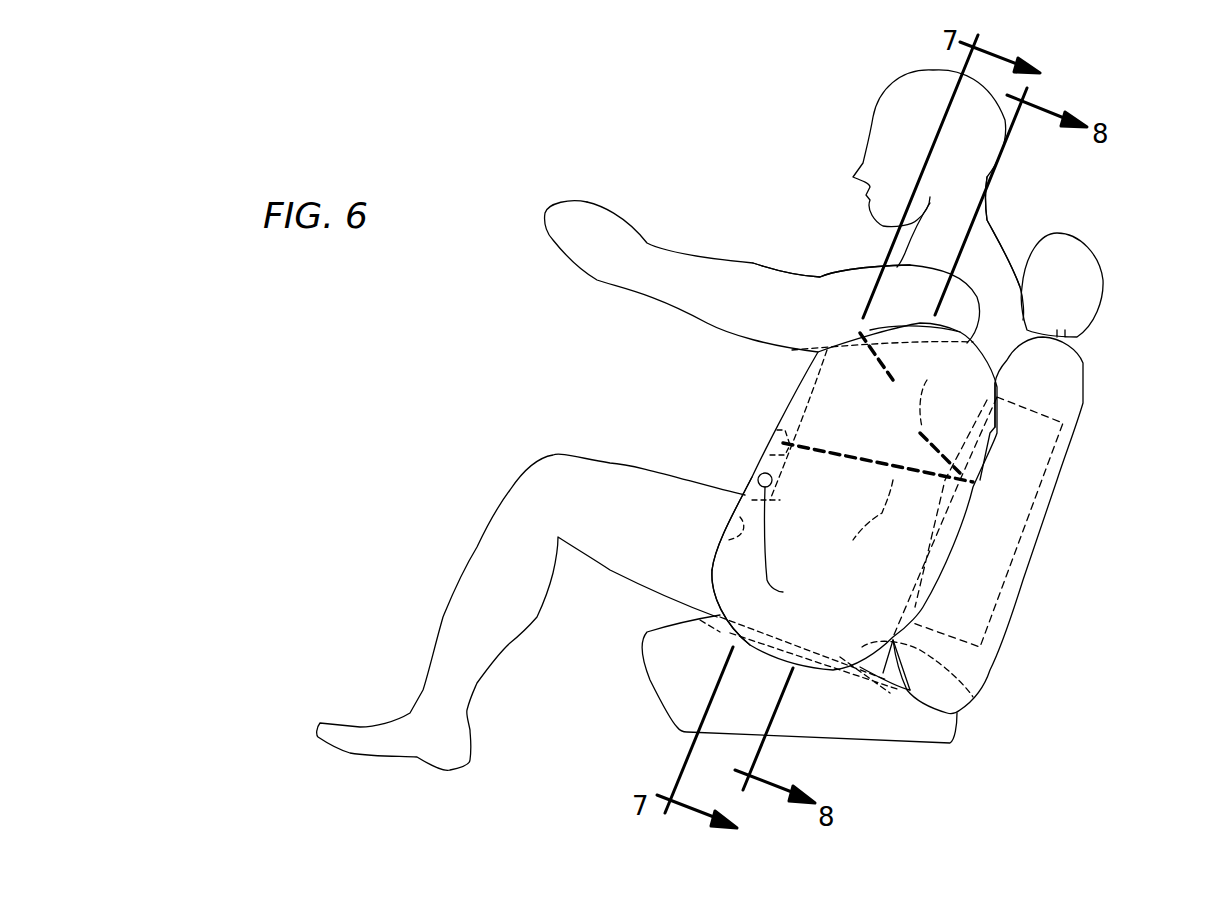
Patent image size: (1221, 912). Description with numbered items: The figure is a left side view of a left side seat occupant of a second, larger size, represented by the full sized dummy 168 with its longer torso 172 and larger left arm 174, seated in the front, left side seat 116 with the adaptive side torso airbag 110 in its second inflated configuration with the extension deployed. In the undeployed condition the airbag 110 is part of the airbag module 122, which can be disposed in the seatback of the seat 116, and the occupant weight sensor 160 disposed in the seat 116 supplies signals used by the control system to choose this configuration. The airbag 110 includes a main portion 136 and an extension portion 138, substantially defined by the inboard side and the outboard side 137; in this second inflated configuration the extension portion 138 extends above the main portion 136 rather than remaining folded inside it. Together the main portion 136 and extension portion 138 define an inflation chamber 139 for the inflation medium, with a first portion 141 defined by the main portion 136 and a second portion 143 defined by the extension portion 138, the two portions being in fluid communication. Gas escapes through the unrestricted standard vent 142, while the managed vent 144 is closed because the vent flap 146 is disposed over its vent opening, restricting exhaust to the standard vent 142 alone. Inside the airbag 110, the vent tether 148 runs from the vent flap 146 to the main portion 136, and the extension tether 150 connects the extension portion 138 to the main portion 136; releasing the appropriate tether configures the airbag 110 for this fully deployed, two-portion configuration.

The adaptive side torso airbag 110 is at (790, 387).
The front, left side seat 116 is at (1085, 383).
The airbag module 122 is at (1067, 460).
The main portion 136 is at (720, 547).
The outboard side 137 is at (733, 583).
The extension portion 138 is at (893, 323).
The inflation chamber 139 is at (740, 517).
The first portion of inflation chamber 141 is at (973, 697).
The standard vent 142 is at (783, 592).
The second portion of inflation chamber 143 is at (993, 387).
The managed vent 144 is at (783, 437).
The vent flap 146 is at (783, 433).
The vent tether 148 is at (861, 519).
The extension tether 150 is at (890, 372).
The occupant weight sensor 160 is at (860, 680).
The full sized dummy 168 is at (990, 217).
The torso 172 is at (1033, 327).
The left arm 174 is at (830, 270).